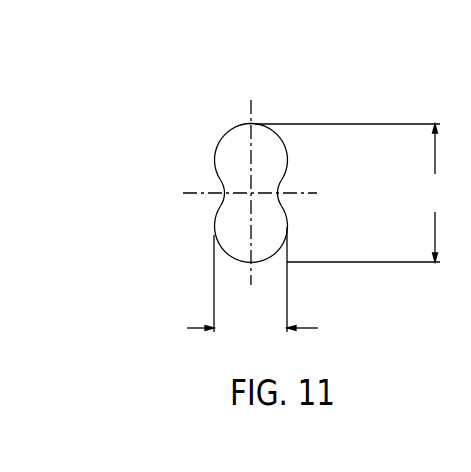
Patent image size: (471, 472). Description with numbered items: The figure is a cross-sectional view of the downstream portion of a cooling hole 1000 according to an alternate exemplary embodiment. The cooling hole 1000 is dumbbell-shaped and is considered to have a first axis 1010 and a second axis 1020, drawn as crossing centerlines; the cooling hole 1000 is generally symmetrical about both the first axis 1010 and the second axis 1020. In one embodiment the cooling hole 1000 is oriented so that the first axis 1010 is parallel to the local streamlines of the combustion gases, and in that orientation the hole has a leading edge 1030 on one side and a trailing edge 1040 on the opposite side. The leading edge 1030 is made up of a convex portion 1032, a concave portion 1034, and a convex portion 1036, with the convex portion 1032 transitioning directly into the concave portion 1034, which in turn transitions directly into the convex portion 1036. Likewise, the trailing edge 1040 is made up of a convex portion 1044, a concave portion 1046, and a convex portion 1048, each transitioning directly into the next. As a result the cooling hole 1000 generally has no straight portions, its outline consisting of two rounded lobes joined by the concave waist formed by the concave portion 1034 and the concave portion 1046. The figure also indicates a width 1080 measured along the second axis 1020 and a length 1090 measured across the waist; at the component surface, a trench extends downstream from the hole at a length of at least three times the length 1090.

The cooling hole 1000 is at (276, 181).
The first axis 1010 is at (190, 191).
The second axis 1020 is at (253, 103).
The leading edge 1030 is at (170, 185).
The convex portion 1032 is at (217, 130).
The concave portion 1034 is at (219, 202).
The convex portion 1036 is at (215, 237).
The trailing edge 1040 is at (326, 171).
The convex portion 1044 is at (284, 129).
The concave portion 1046 is at (280, 186).
The convex portion 1048 is at (288, 223).
The width 1080 is at (359, 193).
The length 1090 is at (252, 283).